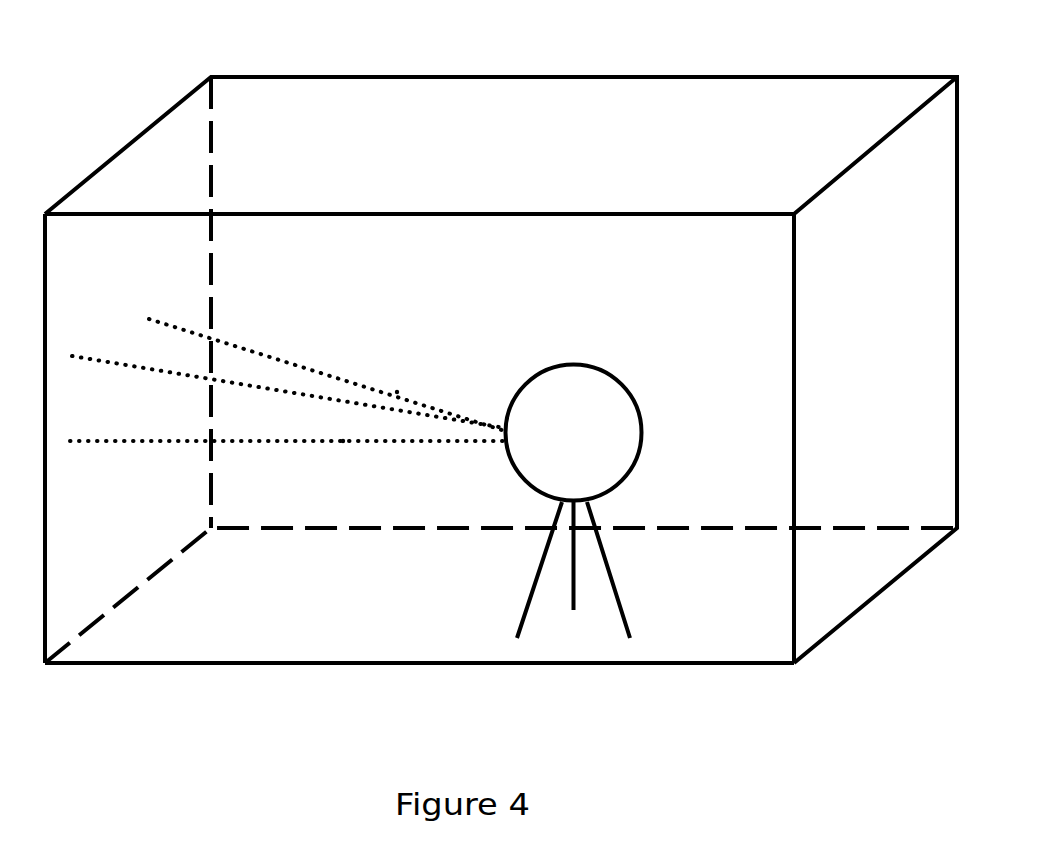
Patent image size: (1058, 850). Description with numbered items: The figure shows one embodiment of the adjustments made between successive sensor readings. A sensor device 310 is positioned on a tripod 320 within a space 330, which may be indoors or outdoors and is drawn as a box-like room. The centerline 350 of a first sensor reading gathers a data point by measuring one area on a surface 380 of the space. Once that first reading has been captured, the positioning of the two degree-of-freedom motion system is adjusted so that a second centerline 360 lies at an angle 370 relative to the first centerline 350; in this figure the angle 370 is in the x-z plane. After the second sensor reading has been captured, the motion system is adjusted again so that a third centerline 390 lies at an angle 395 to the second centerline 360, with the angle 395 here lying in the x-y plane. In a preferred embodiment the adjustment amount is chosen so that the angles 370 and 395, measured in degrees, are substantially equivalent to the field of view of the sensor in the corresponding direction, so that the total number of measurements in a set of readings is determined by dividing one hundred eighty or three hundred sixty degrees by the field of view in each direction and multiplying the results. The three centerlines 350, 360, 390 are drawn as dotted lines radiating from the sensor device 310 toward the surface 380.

The sensor device 310 is at (574, 433).
The tripod 320 is at (603, 548).
The space 330 is at (428, 76).
The centerline of a first sensor reading 350 is at (225, 442).
The second centerline 360 is at (255, 388).
The angle 370 is at (343, 442).
The surface 380 is at (80, 495).
The third centerline 390 is at (397, 393).
The angle 395 is at (240, 367).